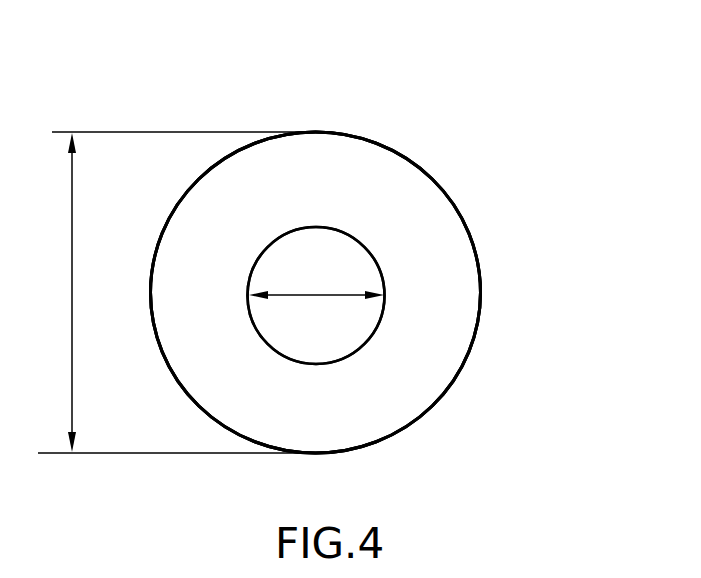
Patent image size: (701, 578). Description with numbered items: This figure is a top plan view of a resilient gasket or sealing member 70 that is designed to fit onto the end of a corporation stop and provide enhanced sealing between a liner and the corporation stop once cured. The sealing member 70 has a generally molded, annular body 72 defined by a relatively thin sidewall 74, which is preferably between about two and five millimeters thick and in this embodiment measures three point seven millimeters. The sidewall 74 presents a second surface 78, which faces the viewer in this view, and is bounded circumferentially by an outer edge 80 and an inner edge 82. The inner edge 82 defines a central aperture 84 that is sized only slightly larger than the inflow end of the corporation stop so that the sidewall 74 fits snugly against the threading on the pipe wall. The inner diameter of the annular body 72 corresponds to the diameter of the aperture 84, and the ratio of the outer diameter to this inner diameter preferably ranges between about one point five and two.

The sealing member 70 is at (327, 237).
The molded body 72 is at (384, 292).
The sidewall 74 is at (480, 258).
The second surface 78 is at (332, 414).
The outer edge 80 is at (482, 286).
The inner edge 82 is at (380, 315).
The aperture 84 is at (334, 268).